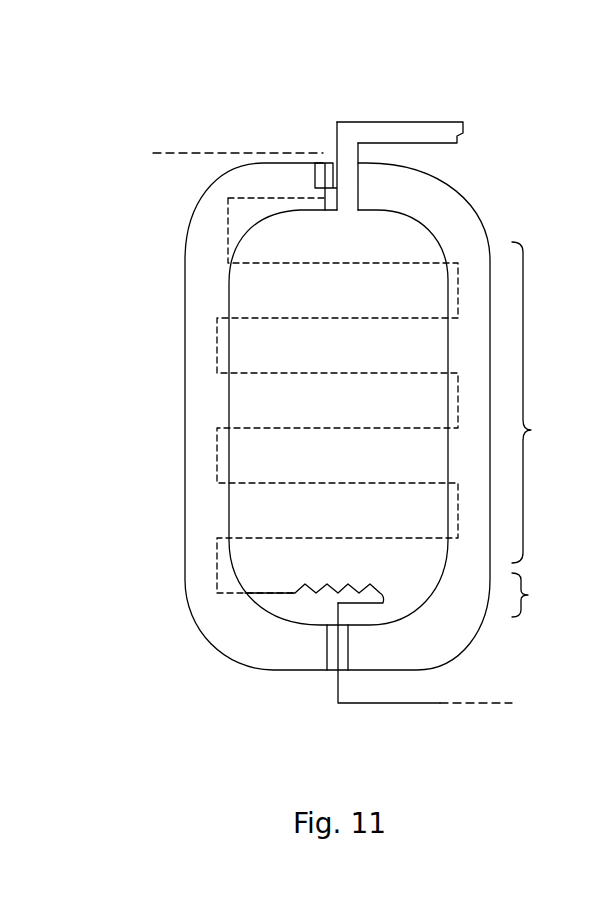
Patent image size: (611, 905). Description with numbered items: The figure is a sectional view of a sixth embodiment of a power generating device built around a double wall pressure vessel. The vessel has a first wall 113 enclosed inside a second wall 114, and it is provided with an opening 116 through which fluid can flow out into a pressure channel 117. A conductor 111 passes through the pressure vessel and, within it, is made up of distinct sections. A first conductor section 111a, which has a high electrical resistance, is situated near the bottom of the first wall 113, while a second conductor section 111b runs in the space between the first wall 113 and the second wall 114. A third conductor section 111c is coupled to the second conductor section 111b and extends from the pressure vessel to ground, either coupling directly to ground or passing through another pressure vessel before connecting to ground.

The conductor 111 is at (470, 703).
The first conductor section 111a is at (552, 595).
The second conductor section 111b is at (553, 402).
The third conductor section 111c is at (185, 153).
The first wall 113 is at (229, 308).
The second wall 114 is at (185, 375).
The opening 116 is at (347, 177).
The pressure channel 117 is at (436, 130).